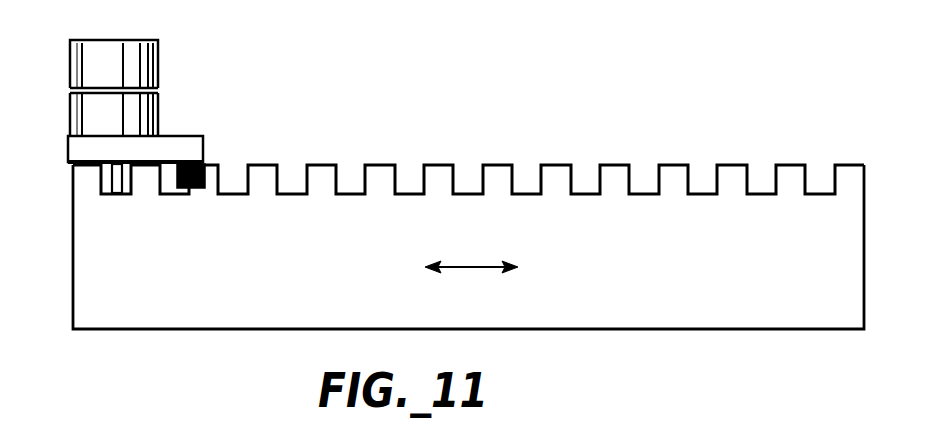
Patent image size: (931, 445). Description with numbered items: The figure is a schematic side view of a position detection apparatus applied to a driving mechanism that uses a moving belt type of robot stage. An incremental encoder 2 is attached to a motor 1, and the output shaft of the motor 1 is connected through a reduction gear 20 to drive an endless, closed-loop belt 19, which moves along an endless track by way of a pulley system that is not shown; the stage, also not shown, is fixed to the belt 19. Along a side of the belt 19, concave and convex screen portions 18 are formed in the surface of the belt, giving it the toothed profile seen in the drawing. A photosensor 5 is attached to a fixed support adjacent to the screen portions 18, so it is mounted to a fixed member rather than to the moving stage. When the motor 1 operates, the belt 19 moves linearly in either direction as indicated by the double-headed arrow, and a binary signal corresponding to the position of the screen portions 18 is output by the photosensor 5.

The motor 1 is at (160, 103).
The incremental encoder 2 is at (160, 65).
The photosensor 5 is at (205, 172).
The concave and convex screen portions 18 is at (320, 172).
The belt 19 is at (385, 248).
The reduction gear 20 is at (178, 145).